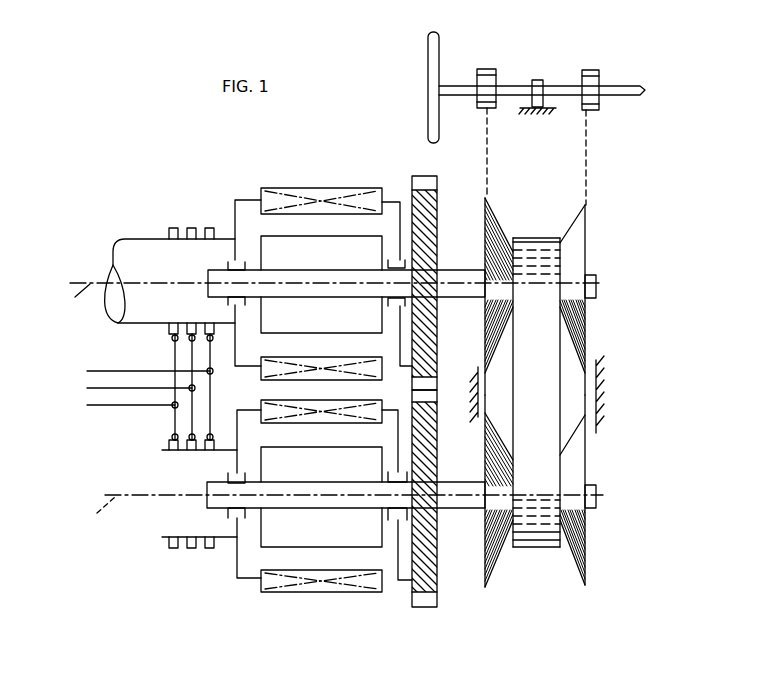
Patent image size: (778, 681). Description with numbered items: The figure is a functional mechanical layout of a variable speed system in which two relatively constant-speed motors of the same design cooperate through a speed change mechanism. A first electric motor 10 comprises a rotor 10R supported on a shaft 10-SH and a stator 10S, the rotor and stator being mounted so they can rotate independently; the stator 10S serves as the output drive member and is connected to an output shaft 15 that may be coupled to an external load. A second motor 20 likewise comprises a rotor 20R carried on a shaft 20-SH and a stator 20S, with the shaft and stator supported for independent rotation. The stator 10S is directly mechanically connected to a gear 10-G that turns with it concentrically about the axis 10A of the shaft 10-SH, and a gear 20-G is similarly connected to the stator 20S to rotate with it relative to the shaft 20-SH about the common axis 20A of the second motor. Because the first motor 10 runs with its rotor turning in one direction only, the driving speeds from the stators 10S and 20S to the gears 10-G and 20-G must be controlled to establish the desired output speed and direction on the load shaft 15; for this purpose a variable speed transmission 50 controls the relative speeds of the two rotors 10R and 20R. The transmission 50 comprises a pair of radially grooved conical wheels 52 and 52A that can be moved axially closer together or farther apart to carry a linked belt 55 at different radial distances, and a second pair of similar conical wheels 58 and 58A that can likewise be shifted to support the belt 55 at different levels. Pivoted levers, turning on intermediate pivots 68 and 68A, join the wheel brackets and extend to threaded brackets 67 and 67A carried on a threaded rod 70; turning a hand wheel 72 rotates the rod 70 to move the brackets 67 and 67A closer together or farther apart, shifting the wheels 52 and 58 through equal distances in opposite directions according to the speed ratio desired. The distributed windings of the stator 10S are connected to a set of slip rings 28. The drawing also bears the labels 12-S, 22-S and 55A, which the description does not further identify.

The first electric motor 10 is at (230, 192).
The axis of the first motor shaft 10A is at (65, 299).
The stator of the first motor 10S is at (288, 192).
The rotor of the first motor 10R is at (313, 245).
The shaft of the first motor 10-SH is at (228, 288).
The gear of the first motor 10-G is at (412, 192).
The slip ring housing of first motor 12-S is at (230, 265).
The output shaft 15 is at (130, 243).
The slip rings 28 is at (207, 341).
The slip ring housing of second motor 22-S is at (228, 477).
The second motor 20 is at (201, 556).
The common axis of the second motor shaft 20A is at (90, 511).
The stator of the second motor 20S is at (283, 402).
The rotor of the second motor 20R is at (318, 530).
The shaft of the second motor 20-SH is at (208, 489).
The gear of the second motor 20-G is at (412, 583).
The variable speed transmission 50 is at (557, 224).
The conical wheel 52A is at (495, 237).
The conical wheel 52 is at (580, 245).
The hub of lower pulley 55A is at (538, 481).
The linked belt 55 is at (548, 532).
The conical wheel 58A is at (484, 555).
The conical wheel 58 is at (587, 568).
The intermediate pivot 68A is at (477, 394).
The pivot 68 is at (612, 382).
The threaded bracket 67A is at (487, 69).
The threaded control bracket 67 is at (588, 70).
The threaded rod 70 is at (537, 80).
The hand wheel 72 is at (430, 80).